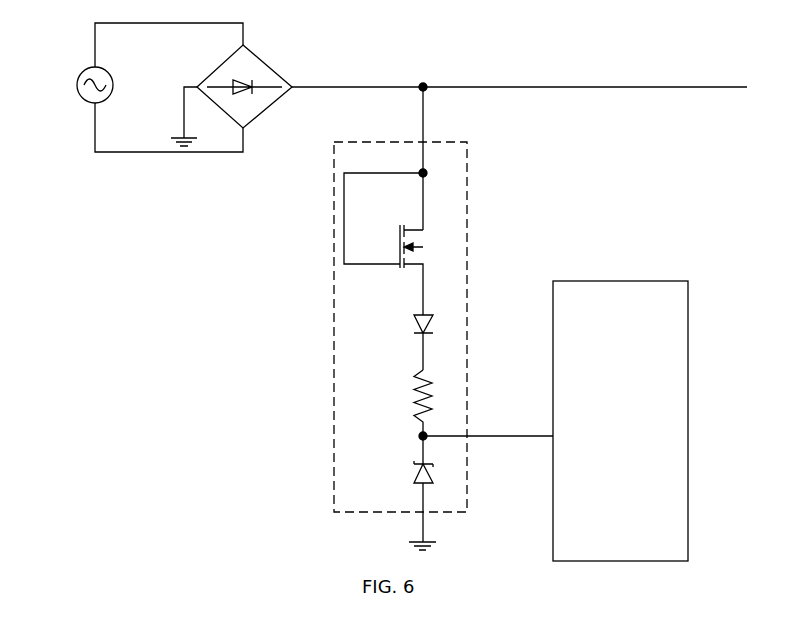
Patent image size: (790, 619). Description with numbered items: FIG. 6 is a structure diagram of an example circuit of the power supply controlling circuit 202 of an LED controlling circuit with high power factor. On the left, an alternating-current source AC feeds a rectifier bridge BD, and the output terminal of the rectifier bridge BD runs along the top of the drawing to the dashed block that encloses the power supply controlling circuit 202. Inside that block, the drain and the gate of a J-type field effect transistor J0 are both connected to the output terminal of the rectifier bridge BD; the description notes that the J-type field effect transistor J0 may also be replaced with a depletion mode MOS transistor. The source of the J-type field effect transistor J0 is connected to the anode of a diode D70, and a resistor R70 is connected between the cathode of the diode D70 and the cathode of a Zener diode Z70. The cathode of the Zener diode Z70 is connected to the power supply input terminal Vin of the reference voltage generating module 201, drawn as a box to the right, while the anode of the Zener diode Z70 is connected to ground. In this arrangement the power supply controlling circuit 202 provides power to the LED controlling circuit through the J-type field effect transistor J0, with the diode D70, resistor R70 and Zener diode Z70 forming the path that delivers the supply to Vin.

The reference voltage generating module 201 is at (613, 281).
The power supply controlling circuit 202 is at (432, 342).
The J-type field effect transistor J0 is at (424, 270).
The diode D70 is at (400, 342).
The resistor R70 is at (402, 417).
The Zener diode Z70 is at (400, 501).
The rectifier bridge BD is at (237, 86).
The AC power source AC is at (75, 85).
The power supply input terminal Vin is at (488, 424).